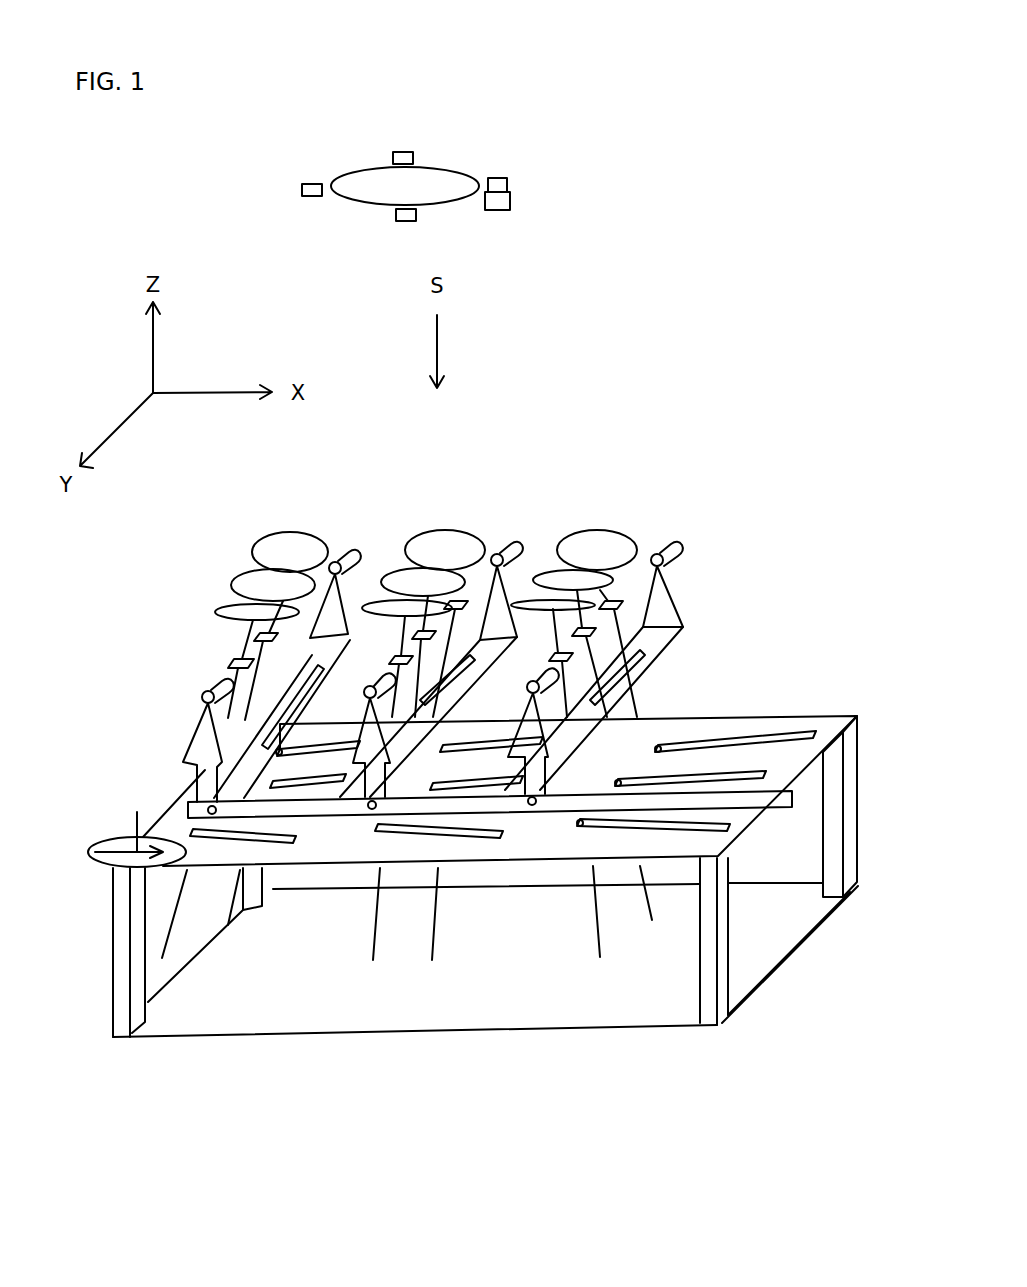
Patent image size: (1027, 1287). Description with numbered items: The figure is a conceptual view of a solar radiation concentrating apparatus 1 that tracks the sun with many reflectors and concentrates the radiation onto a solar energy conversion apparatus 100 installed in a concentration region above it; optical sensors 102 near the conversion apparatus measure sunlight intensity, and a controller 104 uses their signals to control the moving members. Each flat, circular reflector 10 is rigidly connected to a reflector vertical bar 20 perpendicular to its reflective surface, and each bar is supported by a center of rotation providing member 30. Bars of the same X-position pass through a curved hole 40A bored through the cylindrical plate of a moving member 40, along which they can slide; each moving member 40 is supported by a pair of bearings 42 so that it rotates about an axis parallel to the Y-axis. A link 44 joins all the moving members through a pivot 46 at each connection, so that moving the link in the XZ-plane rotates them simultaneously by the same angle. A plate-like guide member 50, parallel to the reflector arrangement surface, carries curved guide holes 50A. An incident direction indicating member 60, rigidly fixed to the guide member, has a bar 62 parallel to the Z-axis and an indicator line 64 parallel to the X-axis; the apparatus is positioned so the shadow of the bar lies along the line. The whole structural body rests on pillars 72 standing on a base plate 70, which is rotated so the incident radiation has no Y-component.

The solar radiation concentrating apparatus 1 is at (563, 507).
The reflector 10 is at (235, 604).
The reflector vertical bar 20 is at (240, 640).
The center of rotation providing member 30 is at (228, 663).
The moving member 40 is at (190, 733).
The hole 40A is at (350, 657).
The bearing 42 is at (347, 552).
The link 44 is at (183, 808).
The pivot 46 is at (372, 812).
The guide member 50 is at (753, 703).
The hole 50A is at (813, 730).
The incident direction indicating member 60 is at (106, 831).
The bar 62 is at (127, 808).
The indicator line 64 is at (105, 838).
The base plate 70 is at (323, 1042).
The pillar 72 is at (692, 985).
The solar energy conversion apparatus 100 is at (343, 207).
The optical sensor 102 is at (517, 183).
The controller 104 is at (517, 207).